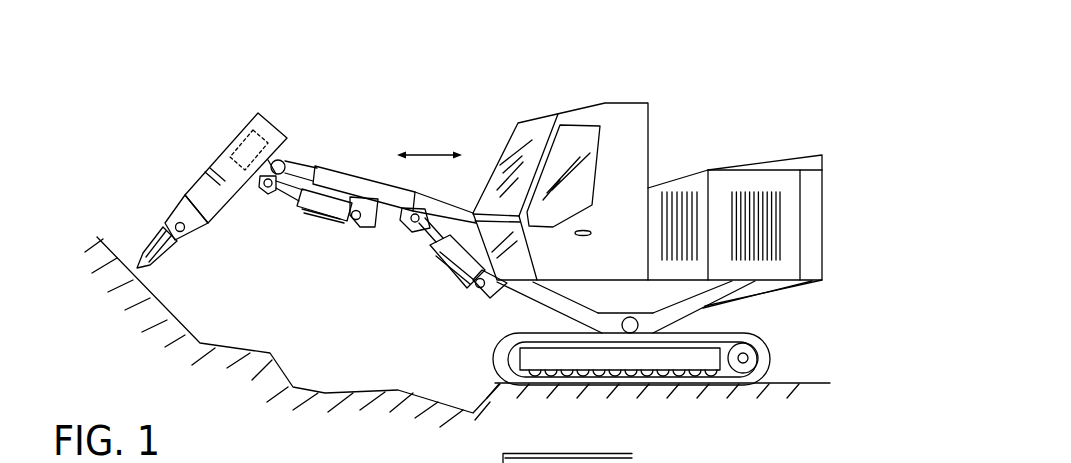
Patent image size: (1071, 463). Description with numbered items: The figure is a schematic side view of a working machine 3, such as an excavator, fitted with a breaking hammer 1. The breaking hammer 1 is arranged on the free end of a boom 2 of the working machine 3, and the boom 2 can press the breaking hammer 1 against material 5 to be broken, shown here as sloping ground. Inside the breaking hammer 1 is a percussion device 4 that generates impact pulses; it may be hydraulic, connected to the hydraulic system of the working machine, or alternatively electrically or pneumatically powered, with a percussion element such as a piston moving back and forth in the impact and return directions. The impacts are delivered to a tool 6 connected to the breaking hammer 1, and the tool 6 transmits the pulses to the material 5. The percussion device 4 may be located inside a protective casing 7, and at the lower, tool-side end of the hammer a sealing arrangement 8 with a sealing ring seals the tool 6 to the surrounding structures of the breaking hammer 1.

The breaking hammer 1 is at (196, 152).
The boom 2 is at (338, 175).
The working machine 3 is at (735, 58).
The percussion device 4 is at (247, 142).
The material to be broken 5 is at (150, 308).
The tool 6 is at (148, 248).
The protective casing 7 is at (236, 151).
The sealing arrangement 8 is at (159, 223).